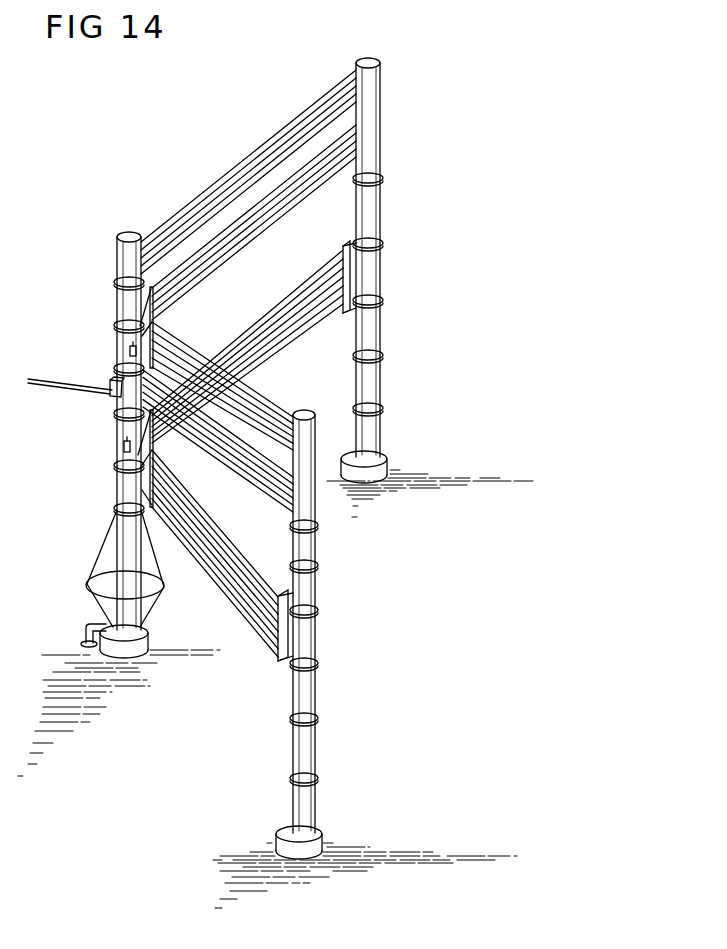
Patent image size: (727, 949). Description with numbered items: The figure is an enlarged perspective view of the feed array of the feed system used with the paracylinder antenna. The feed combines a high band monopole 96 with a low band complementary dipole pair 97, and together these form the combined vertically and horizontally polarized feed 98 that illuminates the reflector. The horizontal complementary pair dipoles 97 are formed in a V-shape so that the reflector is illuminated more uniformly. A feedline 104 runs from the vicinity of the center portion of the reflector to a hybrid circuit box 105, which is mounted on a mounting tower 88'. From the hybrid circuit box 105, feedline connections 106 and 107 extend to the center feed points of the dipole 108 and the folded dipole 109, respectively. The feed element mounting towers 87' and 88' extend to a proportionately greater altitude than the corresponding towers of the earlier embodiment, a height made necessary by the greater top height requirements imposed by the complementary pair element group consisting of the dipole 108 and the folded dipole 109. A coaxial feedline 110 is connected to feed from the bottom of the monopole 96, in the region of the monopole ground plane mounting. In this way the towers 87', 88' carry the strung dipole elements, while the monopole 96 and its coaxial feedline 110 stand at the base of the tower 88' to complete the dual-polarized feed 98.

The feed element mounting tower 87' is at (351, 458).
The mounting tower 88' is at (110, 445).
The high band monopole 96 is at (99, 553).
The low band complementary dipole pair 97 is at (185, 194).
The combined vertically and horizontally polarized feed 98 is at (377, 608).
The feedline 104 is at (54, 388).
The hybrid circuit box 105 is at (112, 379).
The feedline connection 106 is at (124, 438).
The feedline connection 107 is at (132, 367).
The dipole 108 is at (224, 593).
The folded dipole 109 is at (276, 135).
The coaxial feedline 110 is at (85, 627).